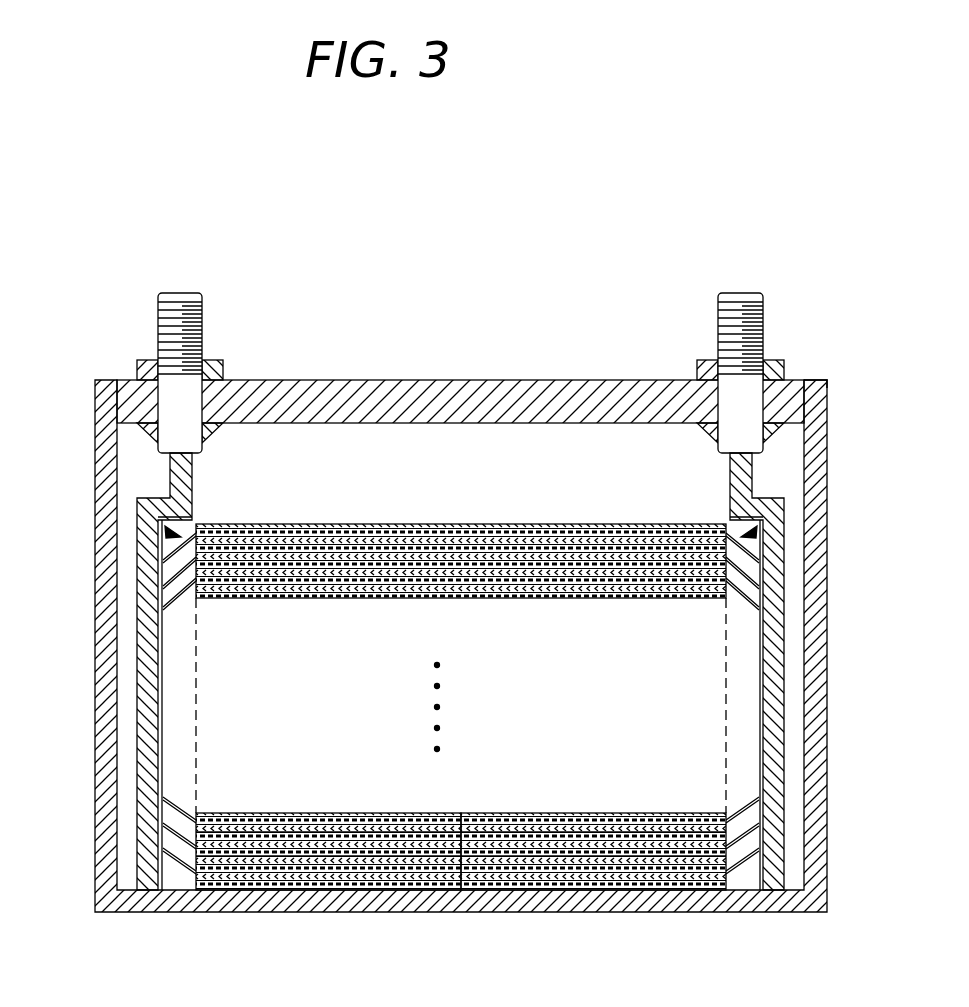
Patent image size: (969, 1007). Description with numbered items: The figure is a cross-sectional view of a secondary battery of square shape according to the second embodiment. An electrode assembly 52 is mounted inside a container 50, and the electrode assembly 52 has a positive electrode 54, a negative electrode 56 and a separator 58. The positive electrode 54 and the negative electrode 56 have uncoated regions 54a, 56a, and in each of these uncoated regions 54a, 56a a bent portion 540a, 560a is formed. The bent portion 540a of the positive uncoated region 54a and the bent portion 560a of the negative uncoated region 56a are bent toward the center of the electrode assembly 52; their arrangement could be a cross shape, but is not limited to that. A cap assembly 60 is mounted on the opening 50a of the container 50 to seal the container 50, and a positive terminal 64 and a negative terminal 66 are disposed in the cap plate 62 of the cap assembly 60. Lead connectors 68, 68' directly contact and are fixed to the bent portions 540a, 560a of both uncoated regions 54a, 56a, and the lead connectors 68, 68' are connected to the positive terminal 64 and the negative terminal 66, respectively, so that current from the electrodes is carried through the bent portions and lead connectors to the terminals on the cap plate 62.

The container 50 is at (828, 762).
The opening 50a is at (808, 380).
The electrode assembly 52 is at (516, 786).
The positive electrode 54 is at (283, 882).
The positive uncoated region 54a is at (160, 518).
The bent portion 540a is at (178, 874).
The negative electrode 56 is at (638, 866).
The negative uncoated region 56a is at (784, 521).
The bent portion 560a is at (740, 862).
The separator 58 is at (423, 858).
The cap assembly 60 is at (352, 368).
The cap plate 62 is at (505, 386).
The positive terminal 64 is at (170, 301).
The negative terminal 66 is at (752, 295).
The lead connector 68 is at (112, 671).
The lead connector 68' is at (821, 671).